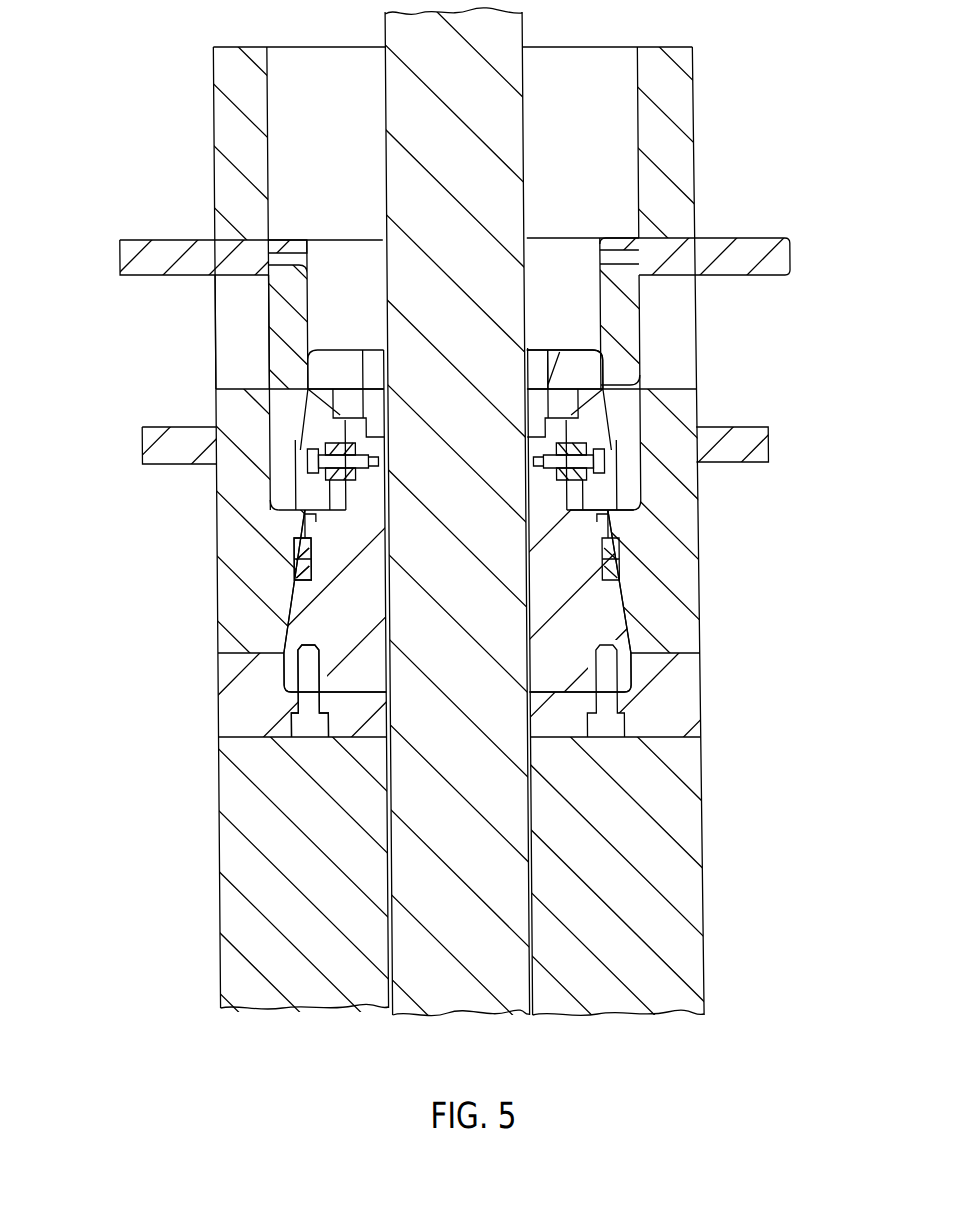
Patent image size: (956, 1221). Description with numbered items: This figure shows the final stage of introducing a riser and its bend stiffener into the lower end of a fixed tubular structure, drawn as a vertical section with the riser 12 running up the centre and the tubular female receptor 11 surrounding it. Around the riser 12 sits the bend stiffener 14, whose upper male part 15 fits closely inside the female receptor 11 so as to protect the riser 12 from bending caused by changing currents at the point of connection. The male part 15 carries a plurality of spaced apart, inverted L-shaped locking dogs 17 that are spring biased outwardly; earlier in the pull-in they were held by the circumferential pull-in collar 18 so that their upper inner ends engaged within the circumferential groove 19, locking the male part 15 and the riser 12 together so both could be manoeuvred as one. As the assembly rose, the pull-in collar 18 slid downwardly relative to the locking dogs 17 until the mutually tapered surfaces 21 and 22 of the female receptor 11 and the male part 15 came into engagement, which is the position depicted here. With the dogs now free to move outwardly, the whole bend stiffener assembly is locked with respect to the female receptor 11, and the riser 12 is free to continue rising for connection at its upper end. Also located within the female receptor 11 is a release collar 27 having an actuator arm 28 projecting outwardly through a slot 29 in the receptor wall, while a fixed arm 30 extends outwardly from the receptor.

The tubular female receptor 11 is at (679, 539).
The riser 12 is at (505, 45).
The bend stiffener 14 is at (671, 818).
The male part 15 is at (611, 617).
The locking dogs 17 is at (304, 434).
The pull-in collar 18 is at (291, 553).
The circumferential groove 19 is at (533, 388).
The tapered surface 21 is at (279, 615).
The tapered surface 22 is at (281, 606).
The release collar 27 is at (290, 322).
The actuator arm 28 is at (187, 240).
The slot 29 is at (231, 308).
The fixed arm 30 is at (174, 430).